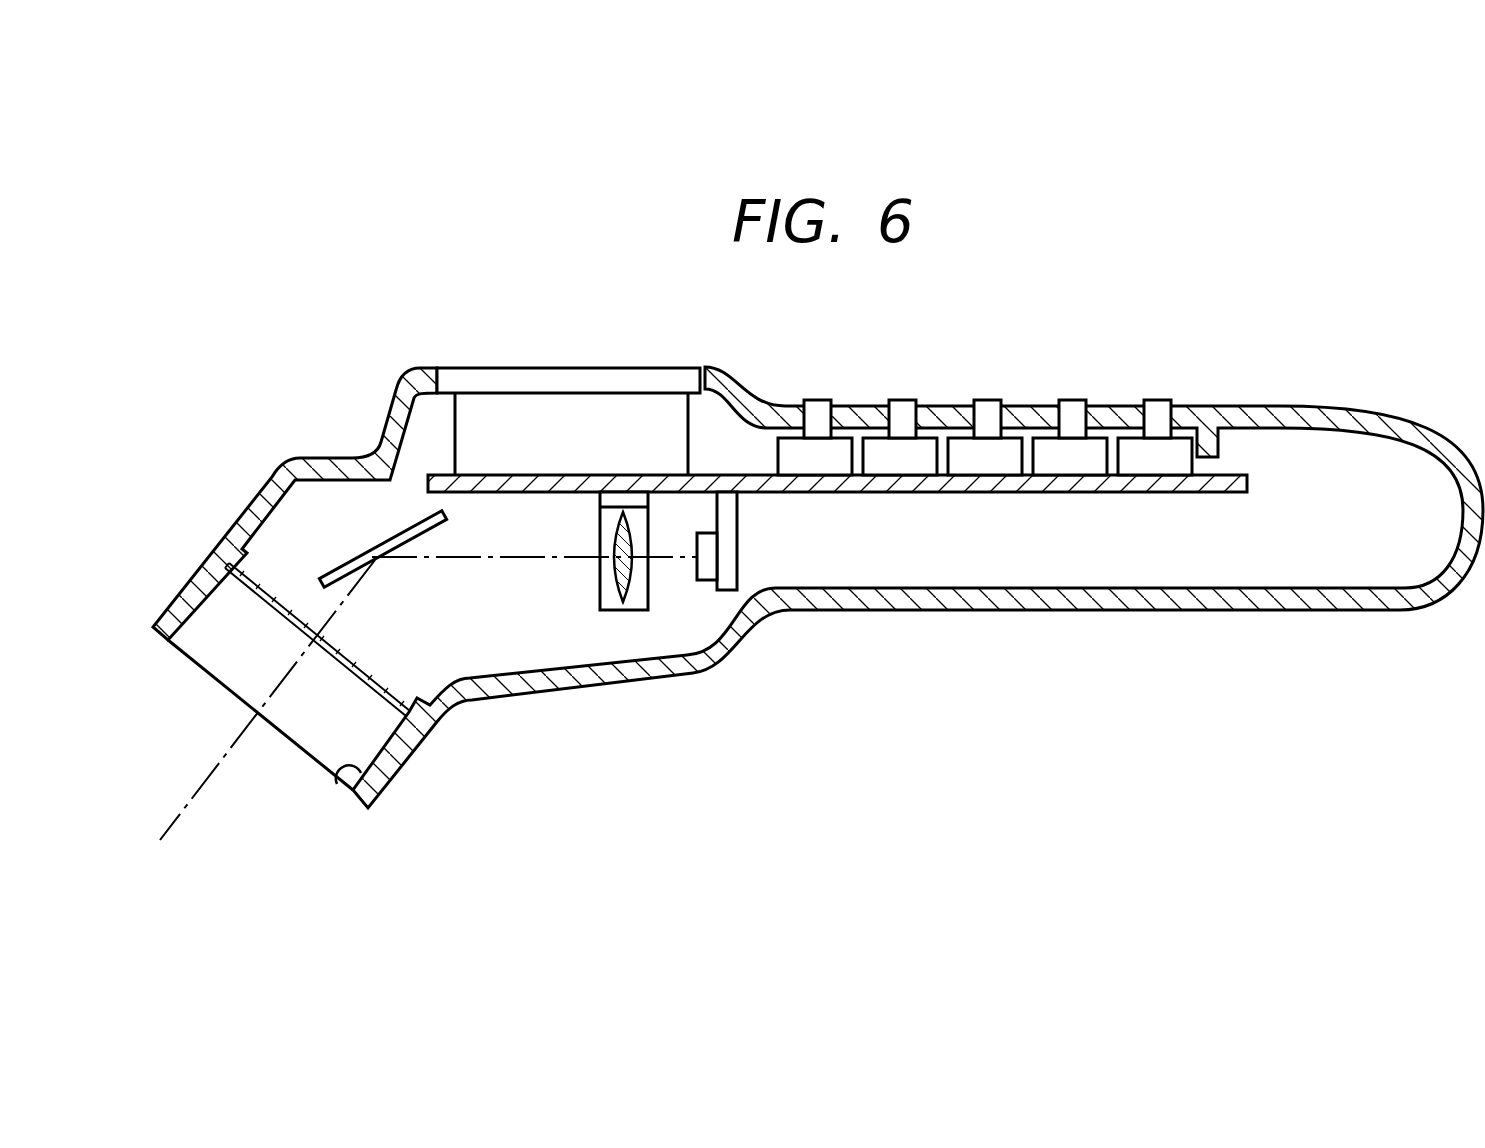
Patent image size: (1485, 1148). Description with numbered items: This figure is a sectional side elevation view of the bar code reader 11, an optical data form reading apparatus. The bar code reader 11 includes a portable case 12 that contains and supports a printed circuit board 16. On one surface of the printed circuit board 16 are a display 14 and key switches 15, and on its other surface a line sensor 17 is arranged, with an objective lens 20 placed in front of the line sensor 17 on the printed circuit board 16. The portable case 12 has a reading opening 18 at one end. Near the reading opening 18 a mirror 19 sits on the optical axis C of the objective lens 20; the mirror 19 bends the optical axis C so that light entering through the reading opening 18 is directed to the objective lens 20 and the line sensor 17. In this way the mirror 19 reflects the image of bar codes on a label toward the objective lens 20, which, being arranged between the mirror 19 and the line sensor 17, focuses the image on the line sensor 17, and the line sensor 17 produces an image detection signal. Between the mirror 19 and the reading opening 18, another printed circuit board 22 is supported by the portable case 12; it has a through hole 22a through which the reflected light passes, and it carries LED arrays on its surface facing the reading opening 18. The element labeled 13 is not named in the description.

The bar code reader 11 is at (1378, 375).
The portable case 12 is at (1282, 400).
The switches 13 is at (1027, 413).
The display 14 is at (662, 369).
The key switches 15 is at (904, 407).
The printed circuit board 16 is at (947, 492).
The line sensor 17 is at (705, 582).
The reading opening 18 is at (340, 778).
The mirror 19 is at (387, 543).
The objective lens 20 is at (614, 612).
The printed circuit board 22 is at (233, 582).
The through hole 22a is at (343, 667).
The optical axis C is at (180, 814).